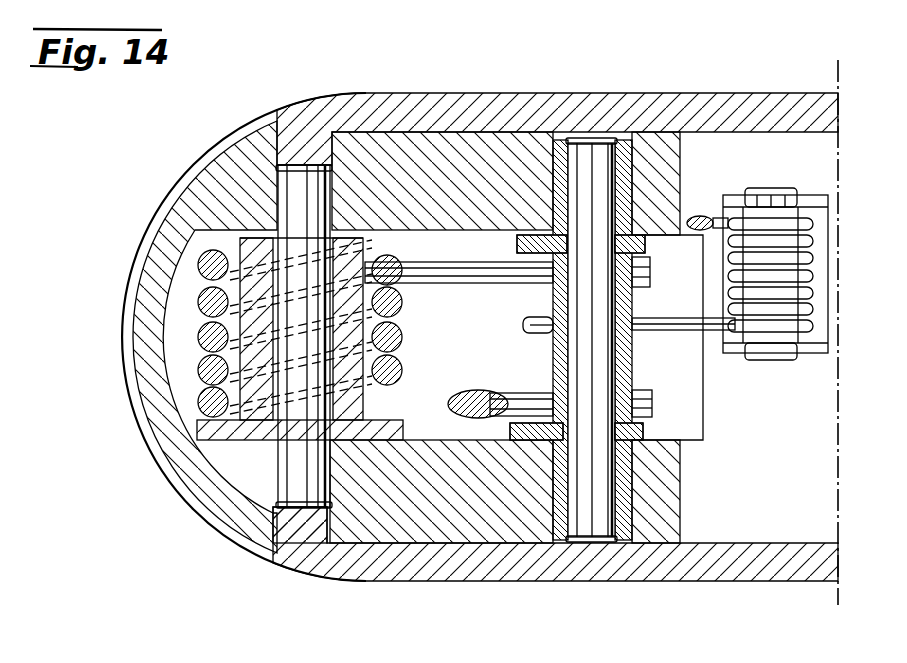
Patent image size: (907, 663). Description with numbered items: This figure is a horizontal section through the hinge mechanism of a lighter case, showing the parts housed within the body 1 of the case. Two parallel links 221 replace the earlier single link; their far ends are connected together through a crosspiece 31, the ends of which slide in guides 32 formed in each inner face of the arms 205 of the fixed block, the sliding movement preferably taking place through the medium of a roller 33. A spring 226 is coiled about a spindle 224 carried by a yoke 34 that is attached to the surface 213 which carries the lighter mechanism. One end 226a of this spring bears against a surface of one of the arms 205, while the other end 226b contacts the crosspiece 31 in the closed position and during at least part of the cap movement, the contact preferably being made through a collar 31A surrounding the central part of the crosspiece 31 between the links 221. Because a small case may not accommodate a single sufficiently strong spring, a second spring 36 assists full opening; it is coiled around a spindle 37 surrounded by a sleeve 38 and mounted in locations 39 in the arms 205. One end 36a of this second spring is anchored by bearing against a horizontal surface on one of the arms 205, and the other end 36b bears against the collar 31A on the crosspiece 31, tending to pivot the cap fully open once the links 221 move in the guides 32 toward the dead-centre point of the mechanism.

The body of the case 1 is at (480, 317).
The arms of the fixed block 205 is at (441, 337).
The parallel links 221 is at (538, 233).
The guides 32 is at (616, 337).
The crosspiece 31 is at (642, 340).
The collar 31A is at (660, 337).
The roller 33 is at (680, 337).
The yoke 34 is at (803, 274).
The second spring 36 is at (200, 311).
The end of the second spring 36a is at (459, 289).
The other end of the second spring 36b is at (500, 377).
The spindle 37 is at (246, 361).
The sleeve 38 is at (244, 341).
The locations 39 is at (288, 551).
The surface 213 is at (851, 332).
The spindle 224 is at (814, 253).
The spring 226 is at (811, 275).
The end of the spring 226a is at (726, 194).
The other end of the spring 226b is at (629, 343).